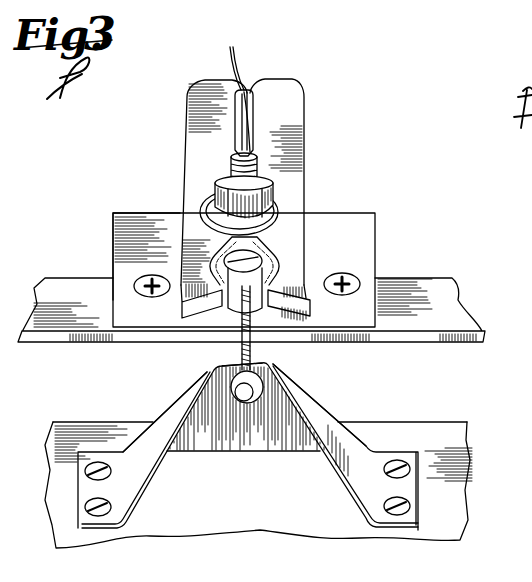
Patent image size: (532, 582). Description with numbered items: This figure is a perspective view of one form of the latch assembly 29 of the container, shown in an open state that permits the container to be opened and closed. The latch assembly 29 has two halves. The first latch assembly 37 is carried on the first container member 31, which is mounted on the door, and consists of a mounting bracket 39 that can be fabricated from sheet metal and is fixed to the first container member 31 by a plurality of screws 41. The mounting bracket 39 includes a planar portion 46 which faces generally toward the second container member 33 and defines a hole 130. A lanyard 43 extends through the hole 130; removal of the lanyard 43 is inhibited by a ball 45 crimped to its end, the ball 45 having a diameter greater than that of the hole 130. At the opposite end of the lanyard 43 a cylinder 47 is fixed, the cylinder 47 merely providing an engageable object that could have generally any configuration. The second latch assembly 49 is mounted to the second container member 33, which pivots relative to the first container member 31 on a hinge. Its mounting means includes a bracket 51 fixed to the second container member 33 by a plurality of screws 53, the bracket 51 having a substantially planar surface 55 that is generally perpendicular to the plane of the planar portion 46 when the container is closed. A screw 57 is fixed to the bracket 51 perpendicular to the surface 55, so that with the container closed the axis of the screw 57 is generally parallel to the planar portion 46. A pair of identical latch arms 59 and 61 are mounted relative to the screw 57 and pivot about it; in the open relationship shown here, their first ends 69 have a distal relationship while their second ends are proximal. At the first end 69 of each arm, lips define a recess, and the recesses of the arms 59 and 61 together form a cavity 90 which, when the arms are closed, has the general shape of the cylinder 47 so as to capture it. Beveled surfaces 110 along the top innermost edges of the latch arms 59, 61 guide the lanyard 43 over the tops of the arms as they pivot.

The latch assembly 29 is at (132, 363).
The first container member 31 is at (445, 432).
The second container member 33 is at (430, 296).
The first latch assembly 37 is at (387, 413).
The mounting bracket 39 is at (345, 422).
The screws 41 is at (92, 510).
The lanyard 43 is at (242, 346).
The ball 45 is at (232, 388).
The planar portion 46 is at (264, 411).
The cylinder 47 is at (251, 240).
The second latch assembly 49 is at (177, 197).
The bracket 51 is at (127, 231).
The screws 53 is at (138, 283).
The planar surface 55 is at (359, 226).
The screw 57 is at (247, 157).
The latch arm 59 is at (192, 88).
The latch arm 61 is at (290, 100).
The first end 69 is at (524, 581).
The cavity 90 is at (279, 222).
The beveled surfaces 110 is at (236, 88).
The hole 130 is at (276, 364).